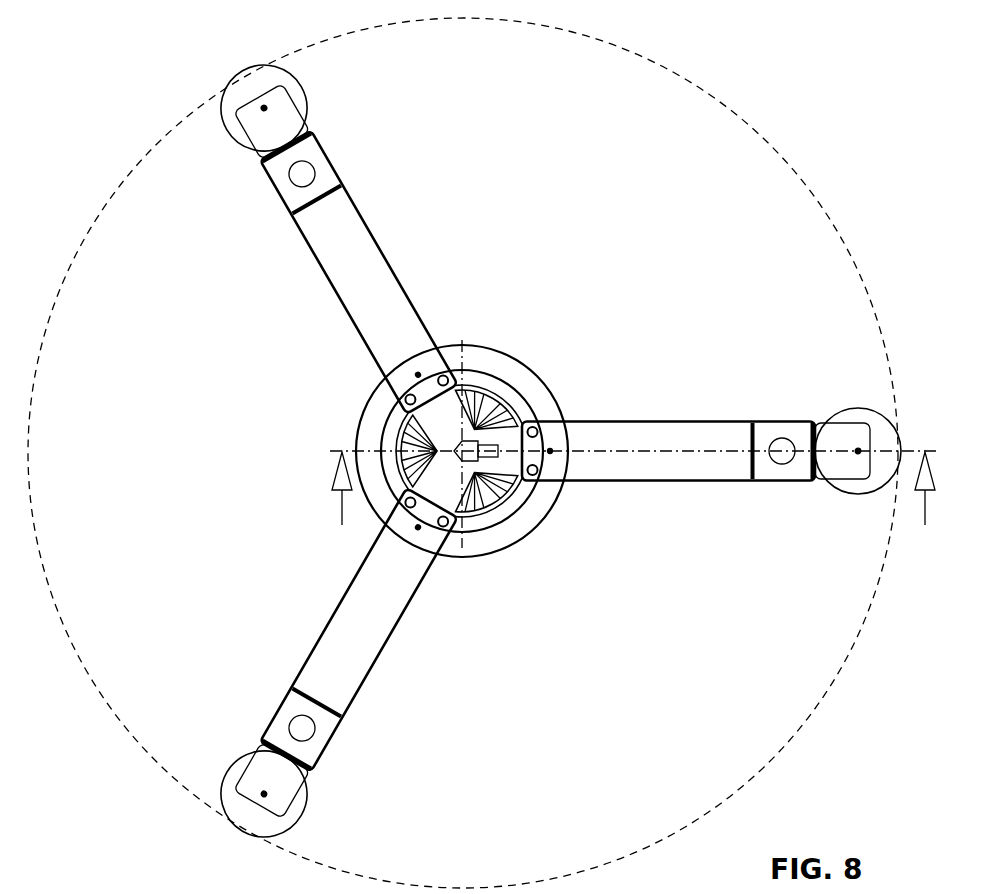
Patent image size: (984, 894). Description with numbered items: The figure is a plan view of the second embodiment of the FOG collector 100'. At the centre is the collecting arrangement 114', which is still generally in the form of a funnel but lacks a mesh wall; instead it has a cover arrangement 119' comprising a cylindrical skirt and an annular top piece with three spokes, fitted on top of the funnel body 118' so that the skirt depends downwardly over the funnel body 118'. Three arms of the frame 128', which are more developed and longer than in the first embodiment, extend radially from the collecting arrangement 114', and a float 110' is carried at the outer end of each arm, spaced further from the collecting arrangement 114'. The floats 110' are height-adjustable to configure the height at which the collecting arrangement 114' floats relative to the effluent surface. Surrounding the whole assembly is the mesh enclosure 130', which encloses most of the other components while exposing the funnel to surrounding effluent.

The FOG collector 100' is at (484, 453).
The mesh enclosure 130' is at (463, 453).
The frame 128' is at (668, 481).
The float 110' is at (858, 479).
The funnel body 118' is at (500, 463).
The cover arrangement 119' is at (462, 478).
The collecting arrangement 114' is at (473, 486).